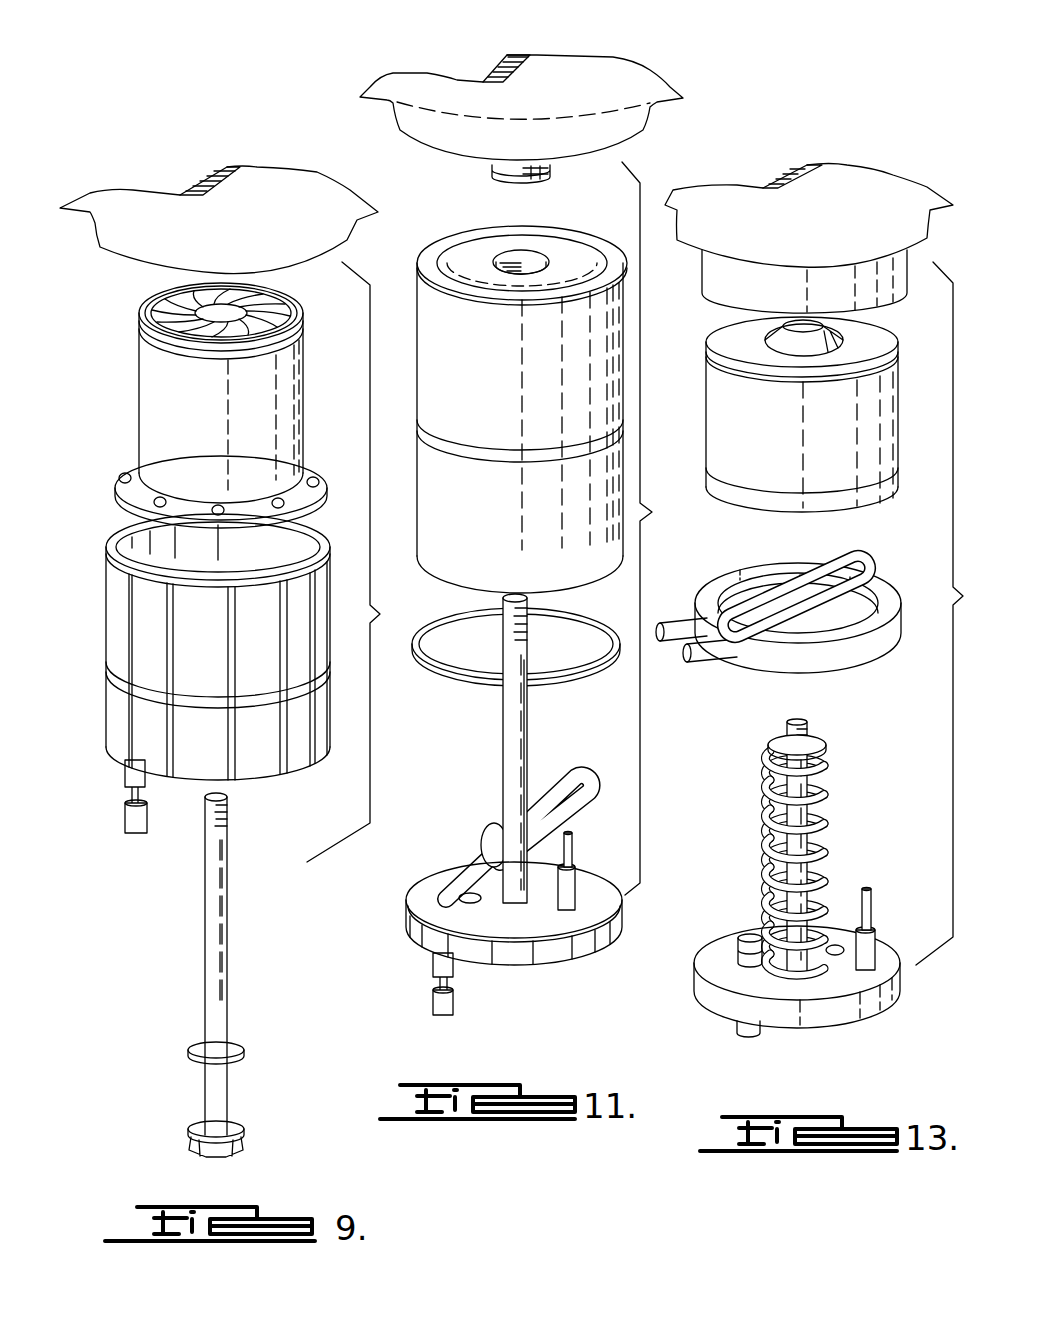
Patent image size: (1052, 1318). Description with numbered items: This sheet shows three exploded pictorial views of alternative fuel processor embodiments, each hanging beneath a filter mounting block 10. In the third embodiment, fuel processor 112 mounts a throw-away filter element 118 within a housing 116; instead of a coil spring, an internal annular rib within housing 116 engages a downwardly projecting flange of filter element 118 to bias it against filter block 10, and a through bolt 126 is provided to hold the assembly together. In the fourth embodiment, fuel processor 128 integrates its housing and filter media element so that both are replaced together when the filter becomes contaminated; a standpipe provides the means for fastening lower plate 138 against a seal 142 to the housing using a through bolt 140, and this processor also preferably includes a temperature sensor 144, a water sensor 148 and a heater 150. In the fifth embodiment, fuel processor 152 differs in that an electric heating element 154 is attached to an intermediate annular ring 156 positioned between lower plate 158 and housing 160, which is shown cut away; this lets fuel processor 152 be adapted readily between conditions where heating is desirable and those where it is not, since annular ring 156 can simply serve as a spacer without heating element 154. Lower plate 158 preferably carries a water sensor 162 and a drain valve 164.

In FIG. 9, the filter mounting block 10 is at (257, 202).
In FIG. 11, the filter mounting block 10 is at (607, 87).
In FIG. 13, the filter mounting block 10 is at (840, 192).
In FIG. 9, the fuel processor 112 is at (368, 562).
In FIG. 9, the housing 116 is at (138, 686).
In FIG. 9, the filter element 118 is at (157, 407).
In FIG. 9, the through bolt 126 is at (206, 945).
In FIG. 11, the fuel processor 128 is at (557, 528).
In FIG. 11, the lower plate 138 is at (557, 955).
In FIG. 11, the through bolt 140 is at (507, 712).
In FIG. 11, the seal 142 is at (582, 672).
In FIG. 11, the temperature sensor 144 is at (465, 904).
In FIG. 11, the water sensor 148 is at (571, 883).
In FIG. 11, the heater 150 is at (579, 800).
In FIG. 13, the fuel processor 152 is at (859, 620).
In FIG. 13, the electric heating element 154 is at (862, 571).
In FIG. 13, the intermediate annular ring 156 is at (873, 645).
In FIG. 13, the lower plate 158 is at (866, 1005).
In FIG. 13, the housing 160 is at (897, 282).
In FIG. 13, the water sensor 162 is at (872, 902).
In FIG. 13, the drain valve 164 is at (734, 945).